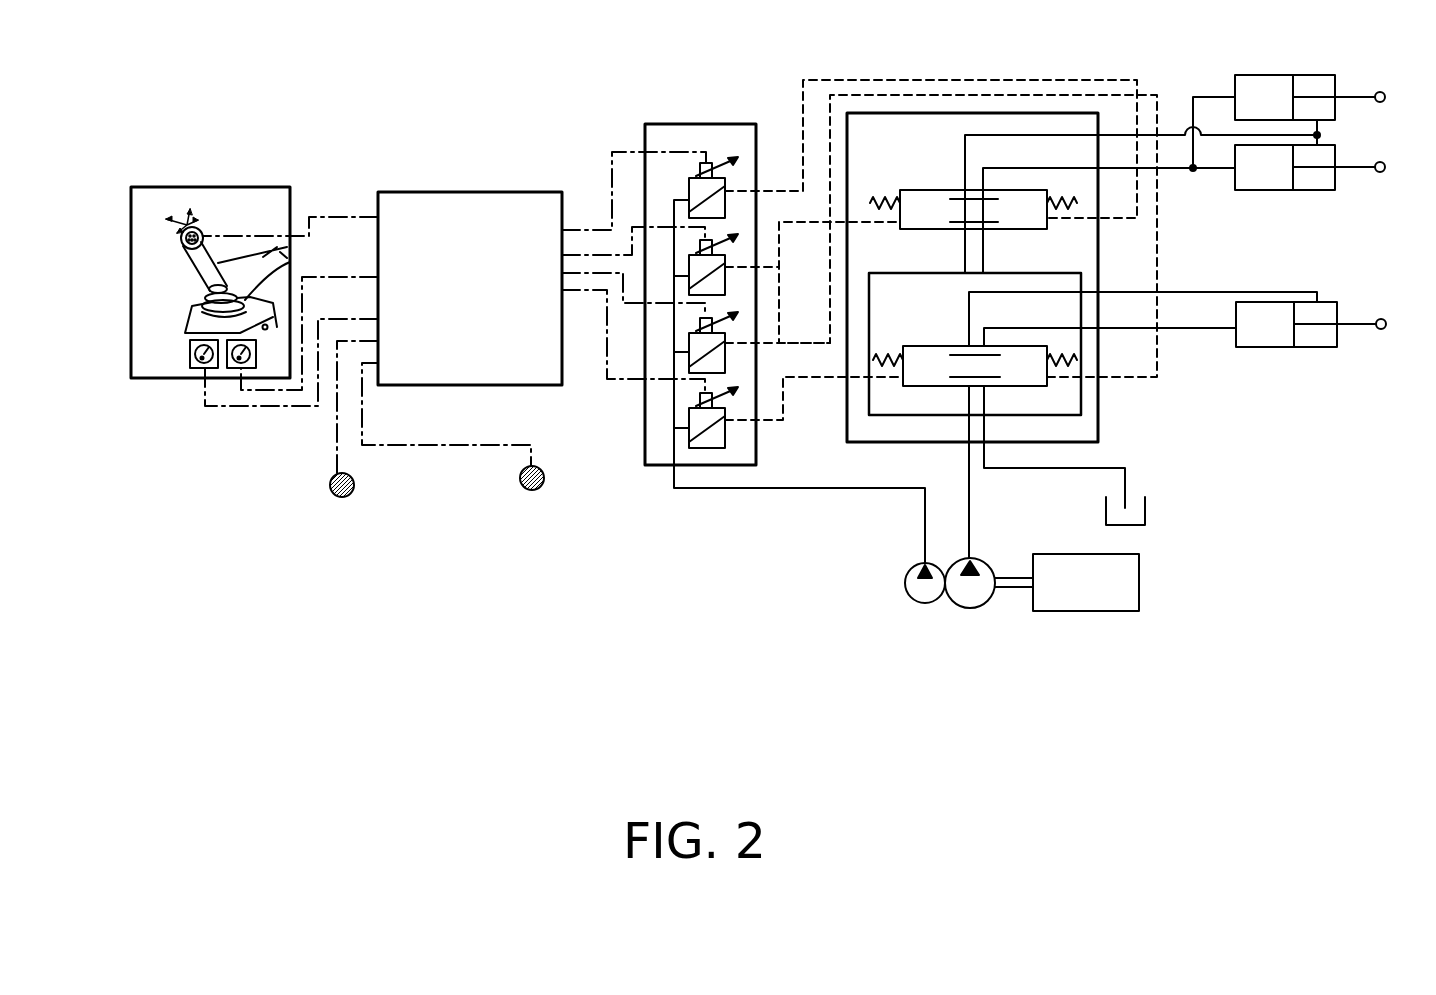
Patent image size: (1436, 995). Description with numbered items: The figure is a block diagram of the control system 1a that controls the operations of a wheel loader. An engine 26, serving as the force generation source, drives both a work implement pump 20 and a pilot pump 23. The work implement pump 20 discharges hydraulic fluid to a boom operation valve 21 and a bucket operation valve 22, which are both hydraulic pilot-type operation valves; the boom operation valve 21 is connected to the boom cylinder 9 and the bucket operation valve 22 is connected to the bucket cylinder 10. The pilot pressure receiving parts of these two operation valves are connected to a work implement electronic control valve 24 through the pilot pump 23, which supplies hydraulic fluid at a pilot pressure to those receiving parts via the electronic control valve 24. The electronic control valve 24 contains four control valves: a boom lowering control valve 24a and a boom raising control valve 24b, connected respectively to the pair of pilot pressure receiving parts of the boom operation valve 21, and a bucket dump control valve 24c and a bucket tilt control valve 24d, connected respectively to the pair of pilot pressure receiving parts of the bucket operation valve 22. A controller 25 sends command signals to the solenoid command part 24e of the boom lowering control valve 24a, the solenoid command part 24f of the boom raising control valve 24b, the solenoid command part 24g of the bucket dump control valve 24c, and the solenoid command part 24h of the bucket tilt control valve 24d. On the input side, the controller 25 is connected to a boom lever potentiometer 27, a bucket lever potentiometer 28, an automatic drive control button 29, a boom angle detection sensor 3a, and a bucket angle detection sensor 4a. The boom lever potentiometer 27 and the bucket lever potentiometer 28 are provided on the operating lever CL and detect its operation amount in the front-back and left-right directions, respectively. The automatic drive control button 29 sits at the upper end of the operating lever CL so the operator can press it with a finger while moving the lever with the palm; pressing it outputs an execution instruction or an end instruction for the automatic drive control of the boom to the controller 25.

The control system 1a is at (261, 596).
The operating lever CL is at (188, 267).
The automatic drive control button 29 is at (196, 227).
The bucket lever potentiometer 28 is at (183, 358).
The boom lever potentiometer 27 is at (238, 368).
The controller 25 is at (486, 191).
The bucket angle detection sensor 4a is at (342, 497).
The boom angle detection sensor 3a is at (532, 490).
The work implement electronic control valve 24 is at (689, 123).
The boom lowering control valve 24a is at (725, 213).
The boom raising control valve 24b is at (727, 285).
The bucket dump control valve 24c is at (727, 363).
The bucket tilt control valve 24d is at (727, 443).
The solenoid command part 24e is at (735, 175).
The solenoid command part 24f is at (740, 248).
The solenoid command part 24g is at (730, 327).
The solenoid command part 24h is at (730, 405).
The boom operation valve 21 is at (932, 189).
The bucket operation valve 22 is at (932, 345).
The boom cylinder 9 is at (1337, 108).
The bucket cylinder 10 is at (1338, 310).
The pilot pump 23 is at (915, 603).
The work implement pump 20 is at (975, 608).
The engine 26 is at (1139, 568).